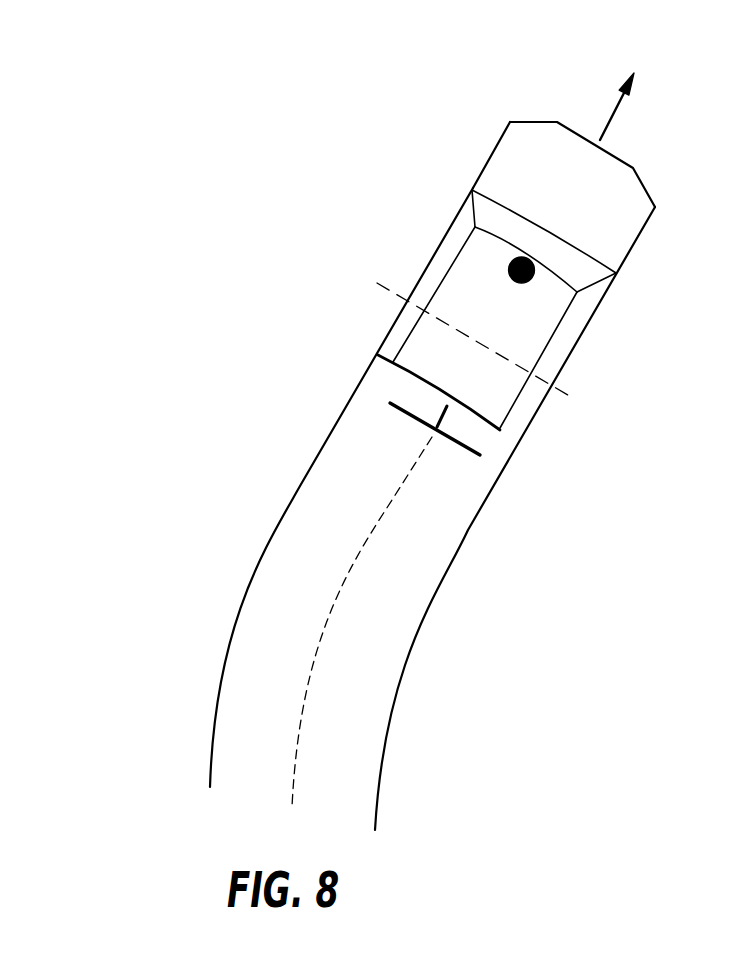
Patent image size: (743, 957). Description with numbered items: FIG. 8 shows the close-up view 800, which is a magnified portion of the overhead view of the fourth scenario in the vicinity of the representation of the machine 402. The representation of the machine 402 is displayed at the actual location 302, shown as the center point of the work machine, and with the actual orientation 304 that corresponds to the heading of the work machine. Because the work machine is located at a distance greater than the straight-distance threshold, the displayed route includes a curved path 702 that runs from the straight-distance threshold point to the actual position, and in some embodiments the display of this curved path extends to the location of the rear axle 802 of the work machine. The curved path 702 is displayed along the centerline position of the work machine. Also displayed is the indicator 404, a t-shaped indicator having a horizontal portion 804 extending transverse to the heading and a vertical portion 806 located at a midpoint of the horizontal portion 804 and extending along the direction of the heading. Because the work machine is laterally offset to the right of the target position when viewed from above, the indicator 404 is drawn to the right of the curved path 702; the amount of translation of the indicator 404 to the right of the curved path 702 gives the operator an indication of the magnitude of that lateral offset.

The close-up view 800 is at (424, 60).
The actual orientation 304 is at (607, 132).
The representation of the machine 402 is at (628, 212).
The actual location 302 is at (534, 277).
The rear axle 802 is at (456, 332).
The indicator 404 is at (407, 412).
The vertical portion 806 is at (445, 428).
The horizontal portion 804 is at (453, 443).
The curved path 702 is at (315, 660).